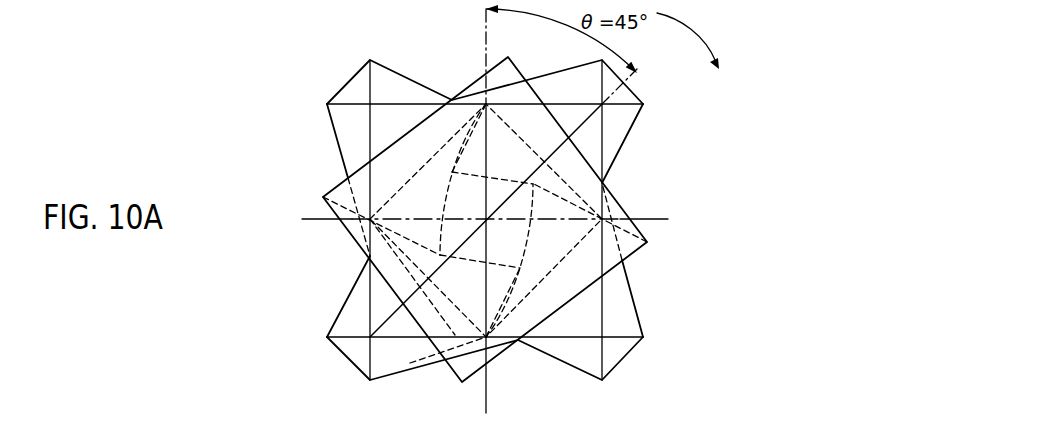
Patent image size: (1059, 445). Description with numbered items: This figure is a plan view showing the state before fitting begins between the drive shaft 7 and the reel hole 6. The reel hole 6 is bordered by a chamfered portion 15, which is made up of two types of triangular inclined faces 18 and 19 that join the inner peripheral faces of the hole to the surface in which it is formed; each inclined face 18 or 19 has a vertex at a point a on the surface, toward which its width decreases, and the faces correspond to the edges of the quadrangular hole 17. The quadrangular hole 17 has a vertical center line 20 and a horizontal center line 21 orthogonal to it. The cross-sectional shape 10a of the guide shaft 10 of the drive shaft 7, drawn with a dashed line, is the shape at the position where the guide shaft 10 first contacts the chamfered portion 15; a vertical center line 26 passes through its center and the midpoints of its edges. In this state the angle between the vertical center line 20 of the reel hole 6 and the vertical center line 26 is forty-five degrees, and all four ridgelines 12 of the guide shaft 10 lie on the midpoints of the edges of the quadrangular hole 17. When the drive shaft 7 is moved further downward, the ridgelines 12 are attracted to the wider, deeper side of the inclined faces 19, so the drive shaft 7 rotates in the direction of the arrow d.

The reel hole 6 is at (326, 79).
The drive shaft 7 is at (623, 205).
The guide shaft 10 is at (586, 320).
The cross-sectional shape 10a is at (603, 279).
The ridgelines 12 is at (430, 98).
The chamfered portion 15 is at (334, 125).
The quadrangular hole 17 is at (626, 351).
The inclined face 18 is at (382, 78).
The inclined face 19 is at (350, 162).
The vertical center line 20 is at (484, 64).
The horizontal center line 21 is at (650, 222).
The vertical center line 26 is at (625, 80).
The point a is at (453, 94).
The arrow d is at (698, 33).